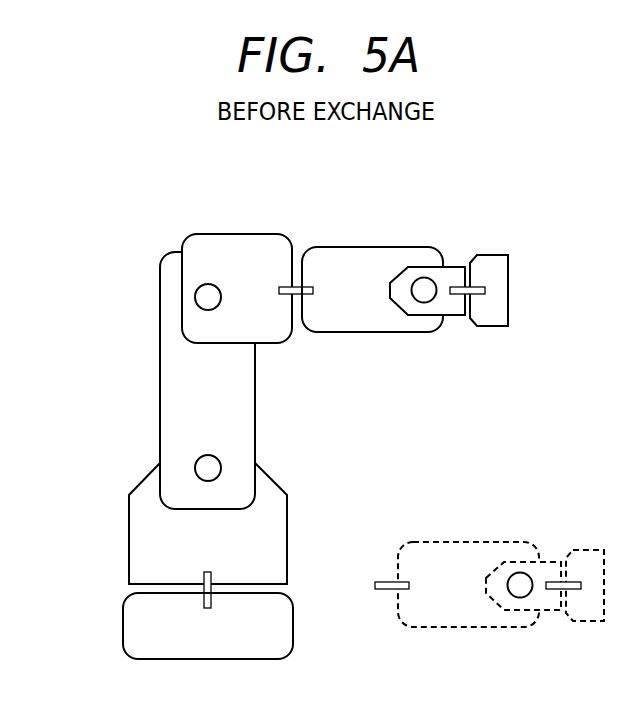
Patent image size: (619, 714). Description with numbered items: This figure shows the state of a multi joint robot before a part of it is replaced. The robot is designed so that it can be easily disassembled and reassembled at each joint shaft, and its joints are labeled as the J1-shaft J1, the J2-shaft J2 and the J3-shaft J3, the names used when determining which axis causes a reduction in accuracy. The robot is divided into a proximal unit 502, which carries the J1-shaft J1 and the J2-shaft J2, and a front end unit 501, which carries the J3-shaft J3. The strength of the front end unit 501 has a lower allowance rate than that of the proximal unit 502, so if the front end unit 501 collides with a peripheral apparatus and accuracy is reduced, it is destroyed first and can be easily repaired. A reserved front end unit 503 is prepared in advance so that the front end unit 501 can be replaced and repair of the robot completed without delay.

The front end unit 501 is at (510, 228).
The proximal unit 502 is at (98, 613).
The reserved front end unit 503 is at (607, 523).
The J1-shaft J1 is at (212, 465).
The J2-shaft J2 is at (212, 293).
The J3-shaft J3 is at (422, 295).